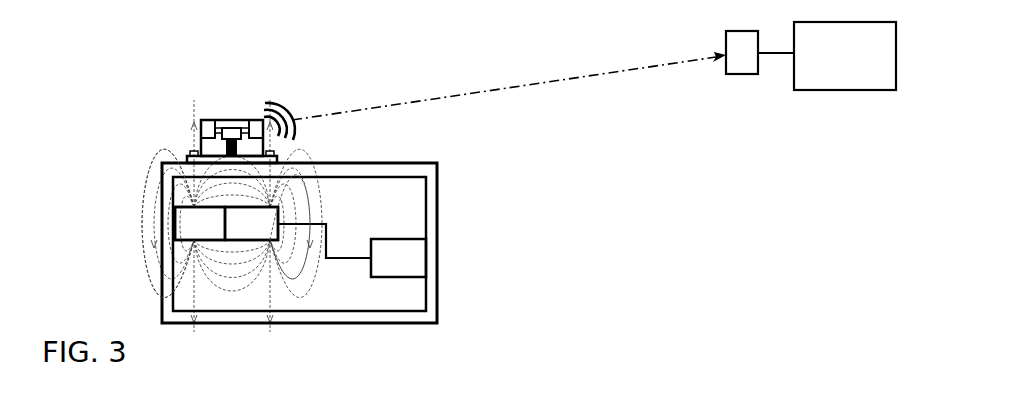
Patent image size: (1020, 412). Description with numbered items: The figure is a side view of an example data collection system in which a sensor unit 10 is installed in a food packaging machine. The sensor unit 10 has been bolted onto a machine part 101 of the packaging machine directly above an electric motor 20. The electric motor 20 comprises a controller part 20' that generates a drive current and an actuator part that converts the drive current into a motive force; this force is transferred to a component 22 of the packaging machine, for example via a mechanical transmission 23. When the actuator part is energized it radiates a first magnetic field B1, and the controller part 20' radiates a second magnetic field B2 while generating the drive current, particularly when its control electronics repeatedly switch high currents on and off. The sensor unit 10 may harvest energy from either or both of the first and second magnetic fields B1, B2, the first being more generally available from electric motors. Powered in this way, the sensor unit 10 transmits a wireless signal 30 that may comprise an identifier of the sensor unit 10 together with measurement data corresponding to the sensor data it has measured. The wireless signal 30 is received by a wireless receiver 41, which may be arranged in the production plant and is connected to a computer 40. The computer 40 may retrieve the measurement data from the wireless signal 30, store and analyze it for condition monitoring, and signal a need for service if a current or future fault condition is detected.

The sensor unit 10 is at (219, 118).
The electric motor 20 is at (173, 191).
The controller part 20' is at (200, 223).
The component 22 is at (398, 258).
The mechanical transmission 23 is at (345, 259).
The wireless signal 30 is at (500, 89).
The computer 40 is at (845, 56).
The wireless receiver 41 is at (760, 52).
The machine part 101 is at (441, 203).
The first magnetic field B1 is at (307, 270).
The second magnetic field B2 is at (153, 238).